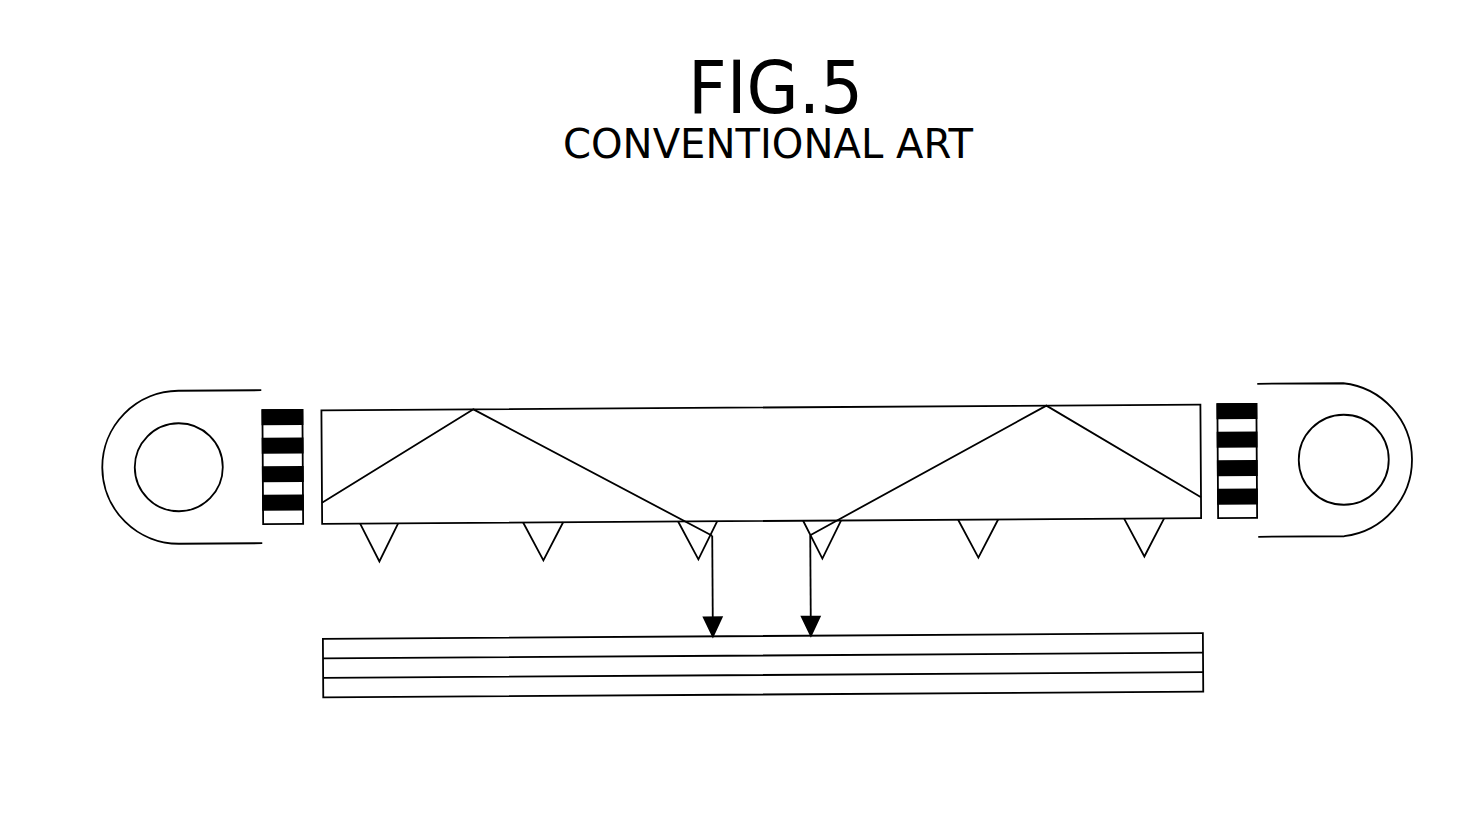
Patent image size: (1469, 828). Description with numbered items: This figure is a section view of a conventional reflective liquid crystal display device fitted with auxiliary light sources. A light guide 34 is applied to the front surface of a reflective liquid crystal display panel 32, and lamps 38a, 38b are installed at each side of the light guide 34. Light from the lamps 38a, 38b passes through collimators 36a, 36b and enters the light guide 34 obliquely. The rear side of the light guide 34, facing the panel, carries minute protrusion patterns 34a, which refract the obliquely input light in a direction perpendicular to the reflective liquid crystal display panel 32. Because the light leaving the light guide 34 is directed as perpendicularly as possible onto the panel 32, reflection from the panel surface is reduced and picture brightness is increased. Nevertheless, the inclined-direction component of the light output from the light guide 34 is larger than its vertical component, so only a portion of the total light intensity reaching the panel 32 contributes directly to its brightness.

The reflective liquid crystal display panel 32 is at (1203, 664).
The light guide 34 is at (1088, 405).
The minute protrusion patterns 34a is at (1153, 535).
The collimator 36a is at (292, 410).
The collimator 36b is at (1233, 404).
The lamp 38a is at (183, 433).
The lamp 38b is at (1367, 430).